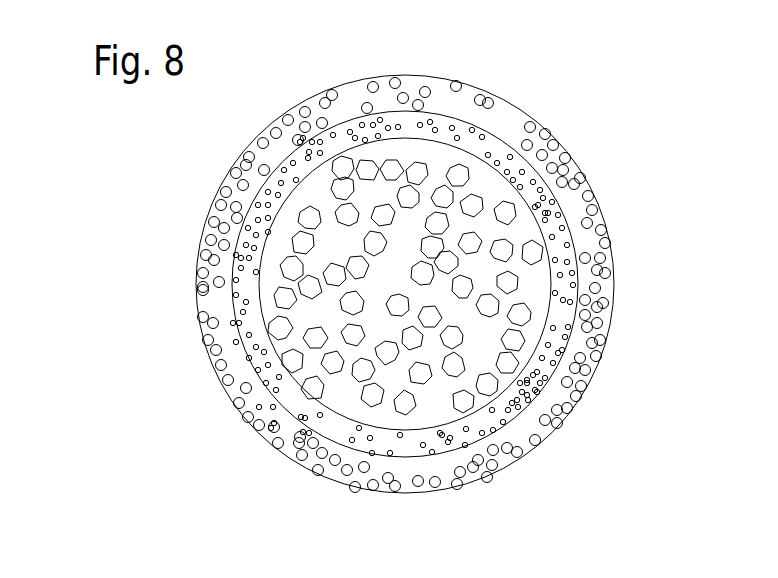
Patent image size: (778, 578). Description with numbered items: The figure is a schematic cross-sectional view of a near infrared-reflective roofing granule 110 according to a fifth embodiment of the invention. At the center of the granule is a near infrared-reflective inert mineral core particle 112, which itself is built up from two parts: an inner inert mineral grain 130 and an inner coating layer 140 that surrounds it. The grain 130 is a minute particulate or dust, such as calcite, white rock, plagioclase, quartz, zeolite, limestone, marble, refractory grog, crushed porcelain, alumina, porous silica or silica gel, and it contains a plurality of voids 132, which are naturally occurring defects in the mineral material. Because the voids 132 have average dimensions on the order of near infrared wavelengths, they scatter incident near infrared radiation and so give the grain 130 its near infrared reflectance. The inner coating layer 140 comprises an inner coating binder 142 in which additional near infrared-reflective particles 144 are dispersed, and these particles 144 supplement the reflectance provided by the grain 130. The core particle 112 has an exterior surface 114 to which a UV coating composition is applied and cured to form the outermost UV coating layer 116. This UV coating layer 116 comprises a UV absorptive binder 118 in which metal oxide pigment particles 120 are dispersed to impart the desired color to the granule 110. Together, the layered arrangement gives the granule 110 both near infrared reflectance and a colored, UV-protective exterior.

The near infrared-reflective roofing granule 110 is at (157, 278).
The near infrared-reflective inert mineral core particle 112 is at (318, 177).
The exterior surface 114 is at (523, 197).
The UV coating layer 116 is at (490, 125).
The UV absorptive binder 118 is at (450, 100).
The metal oxide pigment particles 120 is at (614, 252).
The inner inert mineral grain 130 is at (317, 315).
The voids 132 is at (418, 375).
The inner coating layer 140 is at (522, 392).
The inner coating binder 142 is at (508, 405).
The additional near infrared-reflective particles 144 is at (466, 429).